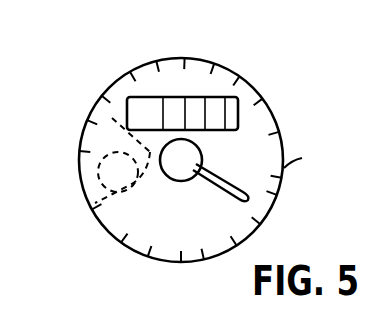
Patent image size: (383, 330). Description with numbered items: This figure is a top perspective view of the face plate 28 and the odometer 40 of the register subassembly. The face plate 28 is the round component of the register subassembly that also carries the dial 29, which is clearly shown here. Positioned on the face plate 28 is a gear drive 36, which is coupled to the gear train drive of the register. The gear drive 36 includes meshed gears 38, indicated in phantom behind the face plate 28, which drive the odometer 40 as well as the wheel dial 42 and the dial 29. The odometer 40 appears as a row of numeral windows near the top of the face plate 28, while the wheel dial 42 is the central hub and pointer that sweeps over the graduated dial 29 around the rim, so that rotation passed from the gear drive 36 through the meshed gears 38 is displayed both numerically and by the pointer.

The face plate 28 is at (276, 200).
The dial 29 is at (312, 160).
The gear drive 36 is at (100, 113).
The meshed gears 38 is at (88, 203).
The odometer 40 is at (193, 97).
The wheel dial 42 is at (202, 155).